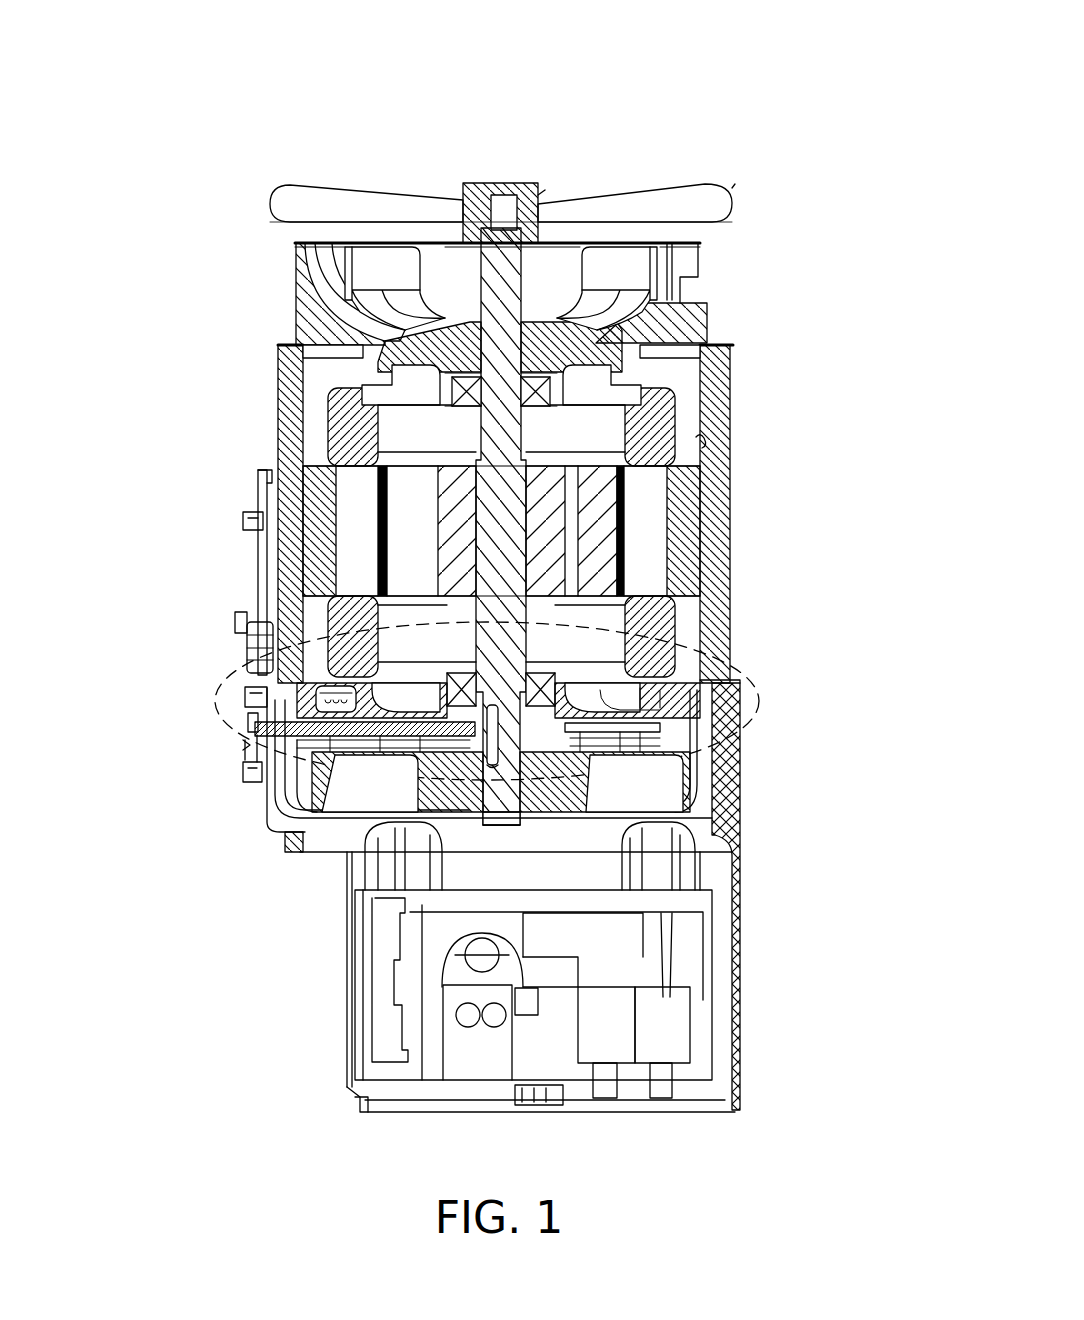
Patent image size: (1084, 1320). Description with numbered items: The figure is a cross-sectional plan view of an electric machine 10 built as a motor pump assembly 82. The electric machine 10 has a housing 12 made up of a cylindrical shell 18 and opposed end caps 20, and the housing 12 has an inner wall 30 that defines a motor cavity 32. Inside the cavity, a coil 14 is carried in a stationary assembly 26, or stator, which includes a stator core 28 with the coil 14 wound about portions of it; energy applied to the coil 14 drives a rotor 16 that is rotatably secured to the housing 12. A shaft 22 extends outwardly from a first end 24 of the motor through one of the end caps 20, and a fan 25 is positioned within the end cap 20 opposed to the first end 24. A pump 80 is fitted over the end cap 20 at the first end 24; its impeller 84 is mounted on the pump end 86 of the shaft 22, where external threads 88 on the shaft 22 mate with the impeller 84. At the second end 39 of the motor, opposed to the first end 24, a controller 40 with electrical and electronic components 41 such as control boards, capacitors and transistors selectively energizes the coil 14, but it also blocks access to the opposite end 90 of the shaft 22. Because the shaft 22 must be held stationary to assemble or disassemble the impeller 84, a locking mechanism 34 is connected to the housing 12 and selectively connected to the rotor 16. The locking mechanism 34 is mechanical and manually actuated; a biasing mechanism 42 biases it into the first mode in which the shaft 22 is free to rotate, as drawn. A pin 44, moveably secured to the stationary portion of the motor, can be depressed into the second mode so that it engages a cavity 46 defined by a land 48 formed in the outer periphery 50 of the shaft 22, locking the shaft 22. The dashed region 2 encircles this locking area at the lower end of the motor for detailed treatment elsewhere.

The electric machine 10 is at (180, 83).
The housing 12 is at (260, 130).
The coil 14 is at (444, 467).
The rotor 16 is at (443, 470).
The cylindrical shell 18 is at (690, 607).
The end cap 20 is at (710, 322).
The shaft 22 is at (510, 430).
The first end 24 is at (397, 190).
The fan 25 is at (655, 775).
The stationary assembly 26 is at (330, 541).
The stator core 28 is at (325, 385).
The inner wall 30 is at (705, 440).
The motor cavity 32 is at (690, 608).
The locking mechanism 34 is at (250, 745).
The second end 39 is at (315, 883).
The controller 40 is at (340, 1085).
The electrical and electronic components 41 is at (505, 1040).
The biasing mechanism 42 is at (398, 745).
The pin 44 is at (262, 707).
The cavity 46 is at (440, 785).
The land 48 is at (488, 700).
The outer periphery 50 is at (448, 790).
The pump 80 is at (753, 150).
The motor pump assembly 82 is at (780, 105).
The impeller 84 is at (733, 193).
The pump end 86 is at (545, 185).
The external threads 88 is at (466, 186).
The opposite end 90 is at (503, 828).
The detail region 2 is at (740, 710).